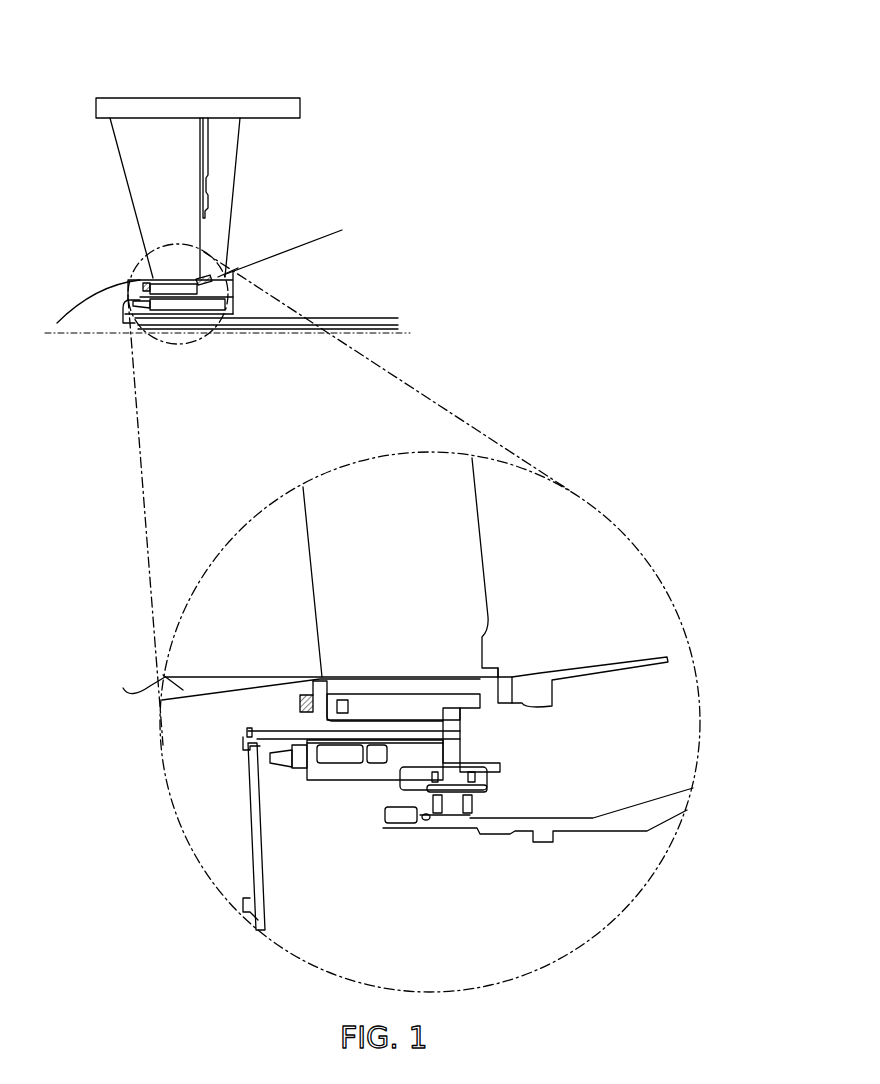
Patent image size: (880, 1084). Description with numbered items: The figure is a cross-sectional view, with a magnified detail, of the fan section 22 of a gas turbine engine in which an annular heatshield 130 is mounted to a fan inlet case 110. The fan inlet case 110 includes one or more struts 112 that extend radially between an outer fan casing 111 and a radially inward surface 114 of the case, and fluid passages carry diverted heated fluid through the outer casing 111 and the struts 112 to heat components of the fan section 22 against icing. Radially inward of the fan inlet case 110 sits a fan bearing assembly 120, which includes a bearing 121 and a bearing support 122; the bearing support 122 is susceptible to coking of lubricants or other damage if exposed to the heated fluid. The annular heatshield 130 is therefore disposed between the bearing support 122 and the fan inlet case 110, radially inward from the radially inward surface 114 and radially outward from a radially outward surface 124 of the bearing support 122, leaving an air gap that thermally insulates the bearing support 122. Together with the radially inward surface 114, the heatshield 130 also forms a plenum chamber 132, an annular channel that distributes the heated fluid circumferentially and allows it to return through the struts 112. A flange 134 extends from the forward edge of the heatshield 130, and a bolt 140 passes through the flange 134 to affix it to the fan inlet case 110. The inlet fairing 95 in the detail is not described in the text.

The fan section 22 is at (140, 38).
The outer fan casing 111 is at (88, 103).
The fan inlet case 110 is at (130, 171).
The fairing / nose cone 95 is at (300, 687).
The strut 112 is at (476, 594).
The radially inward surface 114 is at (407, 690).
The plenum chamber 132 is at (366, 693).
The bolt 140 is at (304, 694).
The flange 134 is at (318, 720).
The annular heatshield 130 is at (362, 723).
The bearing support 122 is at (350, 778).
The radially outward surface 124 is at (383, 777).
The bearing 121 is at (455, 807).
The fan bearing assembly 120 is at (345, 877).